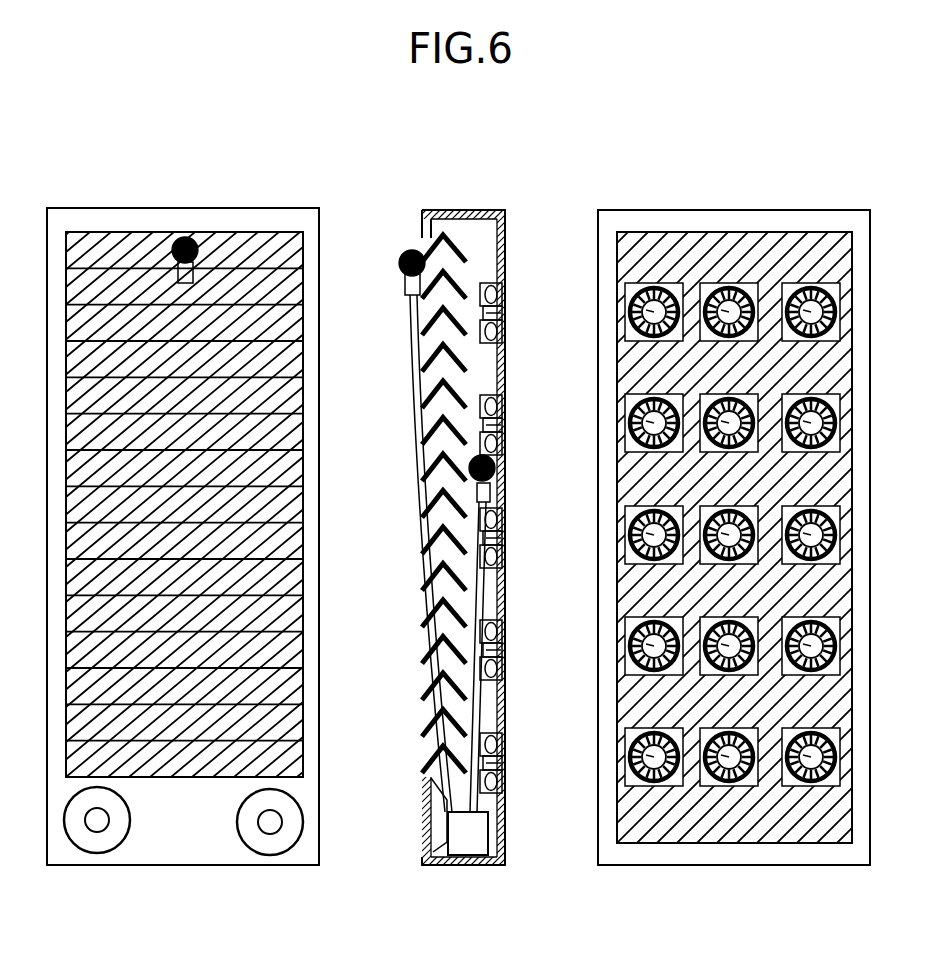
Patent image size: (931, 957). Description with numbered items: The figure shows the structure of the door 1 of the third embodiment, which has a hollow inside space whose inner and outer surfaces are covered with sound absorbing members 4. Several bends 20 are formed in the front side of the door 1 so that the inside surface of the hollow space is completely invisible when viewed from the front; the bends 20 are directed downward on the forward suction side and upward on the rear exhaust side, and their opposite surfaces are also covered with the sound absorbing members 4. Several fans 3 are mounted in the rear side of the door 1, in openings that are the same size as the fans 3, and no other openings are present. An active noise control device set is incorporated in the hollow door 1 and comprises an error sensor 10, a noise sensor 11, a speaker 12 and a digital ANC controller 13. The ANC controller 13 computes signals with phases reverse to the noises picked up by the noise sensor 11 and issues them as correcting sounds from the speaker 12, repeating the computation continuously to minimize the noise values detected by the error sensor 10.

The door 1 is at (107, 215).
The fan 3 is at (650, 310).
The sound absorbing member 4 is at (632, 823).
The error sensor 10 is at (193, 276).
The noise sensor 11 is at (490, 493).
The speaker 12 is at (421, 834).
The ANC controller 13 is at (471, 838).
The bend 20 is at (428, 622).